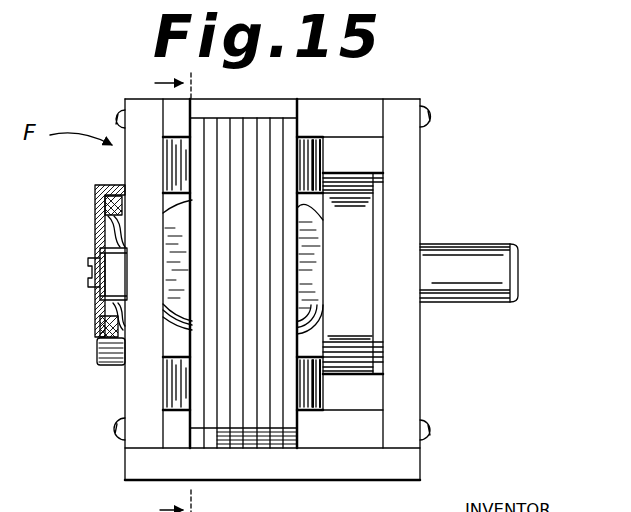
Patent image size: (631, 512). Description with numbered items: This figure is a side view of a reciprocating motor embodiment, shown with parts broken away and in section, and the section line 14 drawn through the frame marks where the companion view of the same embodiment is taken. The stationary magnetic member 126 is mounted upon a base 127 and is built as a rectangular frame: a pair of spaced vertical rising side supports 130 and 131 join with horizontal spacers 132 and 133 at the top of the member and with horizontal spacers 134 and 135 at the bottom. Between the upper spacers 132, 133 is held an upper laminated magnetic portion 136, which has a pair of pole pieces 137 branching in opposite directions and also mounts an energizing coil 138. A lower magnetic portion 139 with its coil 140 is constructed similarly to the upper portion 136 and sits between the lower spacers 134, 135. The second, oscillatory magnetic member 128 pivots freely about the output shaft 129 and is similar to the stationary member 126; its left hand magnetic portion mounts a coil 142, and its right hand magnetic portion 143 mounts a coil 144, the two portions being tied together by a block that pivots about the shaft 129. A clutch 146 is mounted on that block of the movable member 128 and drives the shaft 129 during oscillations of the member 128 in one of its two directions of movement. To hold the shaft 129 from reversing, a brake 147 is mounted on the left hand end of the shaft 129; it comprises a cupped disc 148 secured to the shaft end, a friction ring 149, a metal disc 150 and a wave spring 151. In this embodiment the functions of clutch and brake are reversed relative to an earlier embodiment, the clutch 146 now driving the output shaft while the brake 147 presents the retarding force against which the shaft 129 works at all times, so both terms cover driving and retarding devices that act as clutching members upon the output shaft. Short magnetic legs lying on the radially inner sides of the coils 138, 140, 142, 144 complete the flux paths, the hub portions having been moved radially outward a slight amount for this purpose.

The section line 14 is at (190, 291).
The stationary magnetic member 126 is at (277, 95).
The base 127 is at (296, 482).
The oscillatory magnetic member 128 is at (277, 139).
The output shaft 129 is at (478, 244).
The side support 130 is at (125, 396).
The side support 131 is at (410, 374).
The upper horizontal spacer 132 is at (170, 104).
The upper horizontal spacer 133 is at (365, 116).
The lower horizontal spacer 134 is at (170, 430).
The lower horizontal spacer 135 is at (367, 423).
The upper laminated magnetic portion 136 is at (277, 110).
The pole pieces 137 is at (259, 87).
The energizing coil 138 is at (327, 150).
The lower magnetic portion 139 is at (237, 443).
The coil 140 is at (327, 393).
The coil 142 is at (322, 338).
The right hand magnetic portion 143 is at (277, 313).
The coil 144 is at (305, 268).
The clutch 146 is at (363, 210).
The brake 147 is at (90, 228).
The cupped disc 148 is at (97, 346).
The friction ring 149 is at (117, 322).
The metal disc 150 is at (97, 203).
The wave spring 151 is at (100, 307).